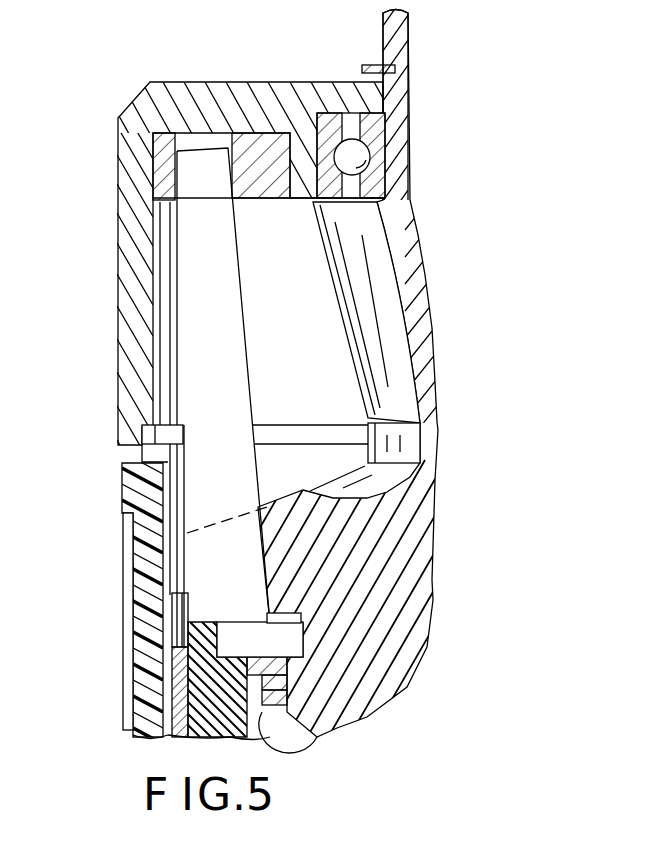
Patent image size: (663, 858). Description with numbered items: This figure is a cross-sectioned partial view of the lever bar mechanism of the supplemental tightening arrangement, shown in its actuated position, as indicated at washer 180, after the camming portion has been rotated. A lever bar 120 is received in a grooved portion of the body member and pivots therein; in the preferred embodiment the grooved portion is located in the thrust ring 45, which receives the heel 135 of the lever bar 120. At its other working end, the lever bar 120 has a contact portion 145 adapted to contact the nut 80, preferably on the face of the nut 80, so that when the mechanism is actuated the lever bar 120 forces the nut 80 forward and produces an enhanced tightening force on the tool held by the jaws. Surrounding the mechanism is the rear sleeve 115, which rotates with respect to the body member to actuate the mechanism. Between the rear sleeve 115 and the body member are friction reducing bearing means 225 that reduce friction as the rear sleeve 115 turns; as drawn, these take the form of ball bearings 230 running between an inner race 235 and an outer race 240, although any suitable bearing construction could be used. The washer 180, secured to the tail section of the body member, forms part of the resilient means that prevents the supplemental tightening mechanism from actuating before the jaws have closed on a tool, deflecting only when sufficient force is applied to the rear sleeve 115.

The rear sleeve 115 is at (172, 82).
The friction reducing bearing means 225 is at (316, 92).
The inner race 235 is at (387, 98).
The ball bearings 230 is at (362, 153).
The outer race 240 is at (335, 200).
The washer 180 is at (177, 174).
The lever bar 120 is at (142, 460).
The thrust ring 45 is at (290, 545).
The heel 135 is at (268, 612).
The contact portion 145 is at (230, 655).
The nut 80 is at (290, 714).